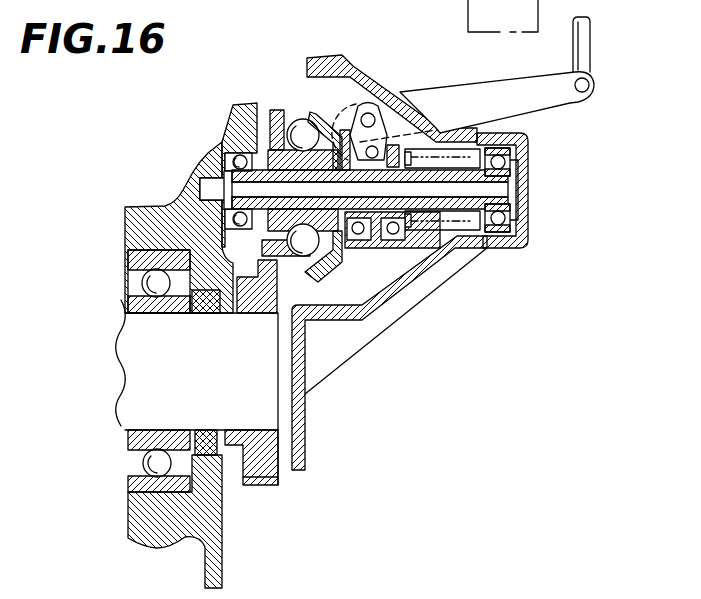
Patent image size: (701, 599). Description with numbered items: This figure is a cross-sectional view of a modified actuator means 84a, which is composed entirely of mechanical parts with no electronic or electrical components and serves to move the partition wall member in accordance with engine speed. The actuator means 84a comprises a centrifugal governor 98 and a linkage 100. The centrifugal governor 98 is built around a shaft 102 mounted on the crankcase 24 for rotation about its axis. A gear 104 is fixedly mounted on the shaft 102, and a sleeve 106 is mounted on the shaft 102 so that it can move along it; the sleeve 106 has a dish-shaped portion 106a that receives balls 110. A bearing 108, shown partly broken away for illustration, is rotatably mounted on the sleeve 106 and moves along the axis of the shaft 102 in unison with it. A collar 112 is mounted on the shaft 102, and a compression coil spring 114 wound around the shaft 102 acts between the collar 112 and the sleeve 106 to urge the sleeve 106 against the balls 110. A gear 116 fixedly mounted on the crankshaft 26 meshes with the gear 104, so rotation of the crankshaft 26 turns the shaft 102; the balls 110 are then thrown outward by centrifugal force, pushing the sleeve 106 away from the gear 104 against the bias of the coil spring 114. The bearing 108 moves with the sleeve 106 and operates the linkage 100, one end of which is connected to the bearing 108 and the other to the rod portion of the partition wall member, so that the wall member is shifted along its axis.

The crankcase 24 is at (175, 188).
The crankshaft 26 is at (113, 383).
The actuator means 84a is at (292, 97).
The centrifugal governor 98 is at (344, 102).
The linkage 100 is at (543, 115).
The shaft 102 is at (319, 241).
The gear 104 is at (248, 123).
The sleeve 106 is at (428, 230).
The dish-shaped portion 106a is at (315, 112).
The bearing 108 is at (378, 233).
The balls 110 is at (290, 121).
The collar 112 is at (466, 250).
The compression coil spring 114 is at (415, 153).
The gear 116 is at (263, 462).